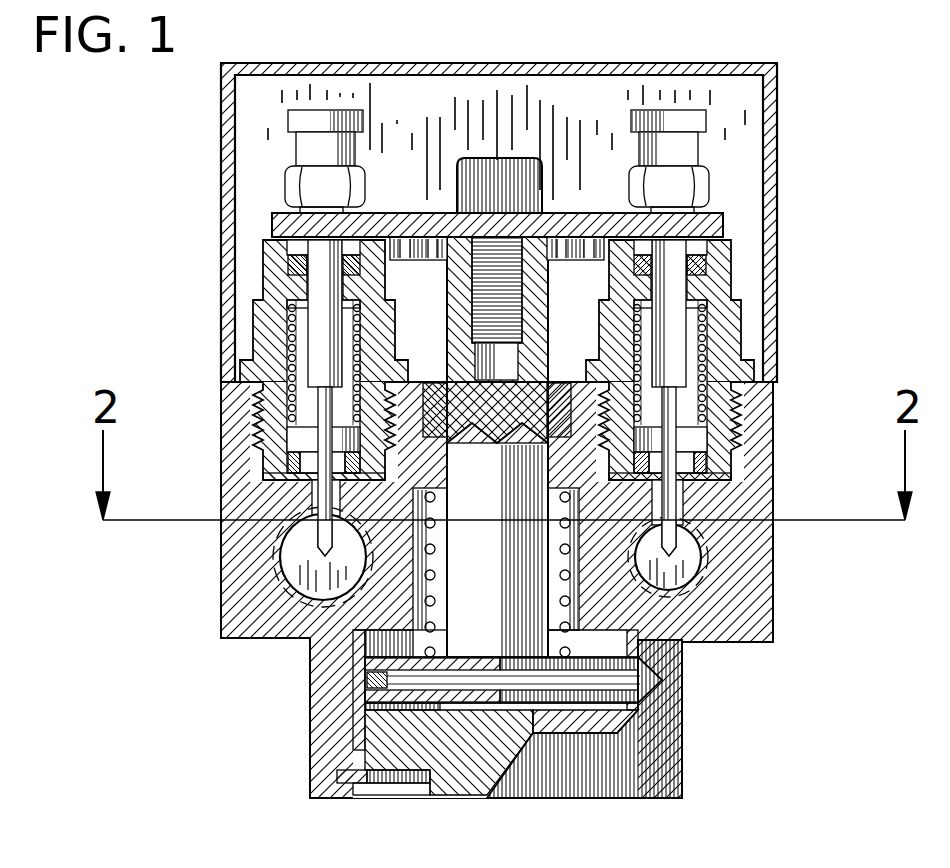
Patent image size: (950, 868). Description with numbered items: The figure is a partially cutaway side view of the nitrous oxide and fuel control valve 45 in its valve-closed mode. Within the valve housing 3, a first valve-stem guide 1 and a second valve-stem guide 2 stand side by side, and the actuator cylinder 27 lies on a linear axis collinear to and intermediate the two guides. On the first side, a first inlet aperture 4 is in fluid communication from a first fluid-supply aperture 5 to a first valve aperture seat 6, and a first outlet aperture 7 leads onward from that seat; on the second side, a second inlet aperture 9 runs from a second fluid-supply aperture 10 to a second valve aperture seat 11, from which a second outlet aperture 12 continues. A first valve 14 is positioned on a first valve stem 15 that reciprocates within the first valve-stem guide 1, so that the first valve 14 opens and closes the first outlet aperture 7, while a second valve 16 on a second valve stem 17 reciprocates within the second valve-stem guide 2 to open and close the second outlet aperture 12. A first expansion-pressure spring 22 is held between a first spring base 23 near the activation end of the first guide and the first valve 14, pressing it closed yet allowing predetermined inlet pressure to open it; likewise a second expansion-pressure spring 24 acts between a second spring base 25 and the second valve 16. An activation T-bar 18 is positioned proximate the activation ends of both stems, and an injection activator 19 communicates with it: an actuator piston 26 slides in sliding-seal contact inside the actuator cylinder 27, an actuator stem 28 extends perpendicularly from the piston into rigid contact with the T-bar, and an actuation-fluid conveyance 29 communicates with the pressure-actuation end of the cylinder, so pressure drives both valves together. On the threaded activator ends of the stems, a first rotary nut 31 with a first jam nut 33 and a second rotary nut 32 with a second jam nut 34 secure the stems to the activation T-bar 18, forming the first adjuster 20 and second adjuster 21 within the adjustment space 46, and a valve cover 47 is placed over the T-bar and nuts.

The first valve-stem guide 1 is at (263, 275).
The second valve-stem guide 2 is at (735, 275).
The valve housing 3 is at (775, 625).
The first inlet aperture 4 is at (322, 540).
The first fluid-supply aperture 5 is at (300, 578).
The first valve aperture seat 6 is at (297, 335).
The first outlet aperture 7 is at (295, 485).
The second inlet aperture 9 is at (668, 535).
The second fluid-supply aperture 10 is at (700, 580).
The second valve aperture seat 11 is at (705, 333).
The second outlet aperture 12 is at (700, 490).
The first valve 14 is at (300, 440).
The first valve stem 15 is at (318, 380).
The second valve 16 is at (700, 440).
The second valve stem 17 is at (680, 380).
The activation T-bar 18 is at (427, 243).
The injection activator 19 is at (490, 744).
The first adjuster 20 is at (256, 152).
The second adjuster 21 is at (749, 153).
The first expansion-pressure spring 22 is at (358, 350).
The first spring base 23 is at (358, 310).
The second expansion-pressure spring 24 is at (637, 350).
The second spring base 25 is at (637, 310).
The actuator piston 26 is at (570, 680).
The actuator cylinder 27 is at (640, 705).
The actuator stem 28 is at (513, 585).
The actuation-fluid conveyance 29 is at (495, 735).
The first rotary nut 31 is at (285, 180).
The second rotary nut 32 is at (712, 180).
The first jam nut 33 is at (288, 120).
The second jam nut 34 is at (710, 120).
The nitrous oxide and fuel control valve 45 is at (797, 49).
The adjustment space 46 is at (272, 225).
The valve cover 47 is at (512, 64).